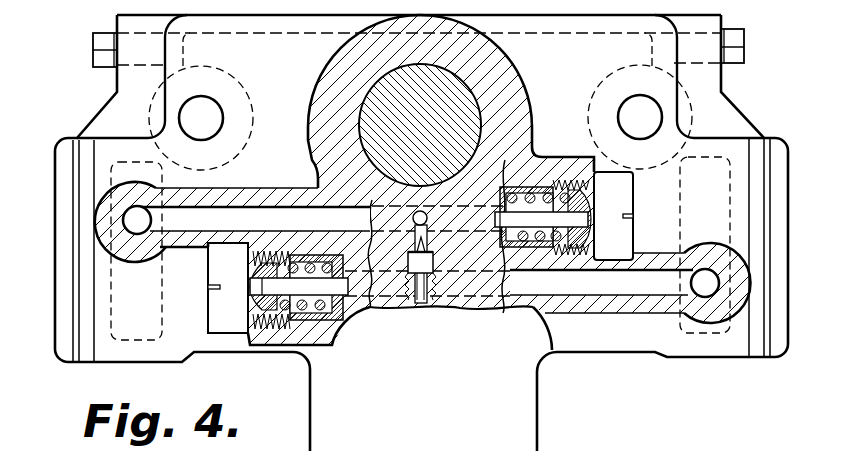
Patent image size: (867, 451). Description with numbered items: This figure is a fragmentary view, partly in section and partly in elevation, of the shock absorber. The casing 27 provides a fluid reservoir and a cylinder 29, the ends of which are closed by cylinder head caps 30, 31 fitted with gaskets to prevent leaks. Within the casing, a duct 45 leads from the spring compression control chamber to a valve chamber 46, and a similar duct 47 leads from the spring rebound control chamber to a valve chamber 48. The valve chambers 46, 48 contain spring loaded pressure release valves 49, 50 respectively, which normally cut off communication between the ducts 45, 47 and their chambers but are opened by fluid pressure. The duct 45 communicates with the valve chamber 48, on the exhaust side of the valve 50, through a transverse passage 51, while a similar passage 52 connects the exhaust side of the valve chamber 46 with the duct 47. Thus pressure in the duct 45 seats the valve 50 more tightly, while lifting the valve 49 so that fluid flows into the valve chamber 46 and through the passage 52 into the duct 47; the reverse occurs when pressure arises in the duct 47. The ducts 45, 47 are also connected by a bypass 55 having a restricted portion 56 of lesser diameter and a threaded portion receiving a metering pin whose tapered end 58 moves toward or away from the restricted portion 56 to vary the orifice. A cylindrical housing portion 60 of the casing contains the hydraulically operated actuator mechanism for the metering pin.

The casing 27 is at (632, 78).
The cylinder 29 is at (592, 337).
The cylinder head cap 30 is at (63, 220).
The cylinder head cap 31 is at (777, 250).
The duct 45 is at (136, 207).
The valve chamber 46 is at (542, 195).
The duct 47 is at (645, 283).
The valve chamber 48 is at (318, 315).
The pressure release valve 49 is at (503, 307).
The pressure release valve 50 is at (342, 302).
The transverse passage 51 is at (308, 246).
The passage 52 is at (523, 260).
The bypass 55 is at (440, 268).
The restricted portion 56 is at (380, 227).
The tapered end 58 is at (423, 308).
The housing portion 60 is at (520, 442).